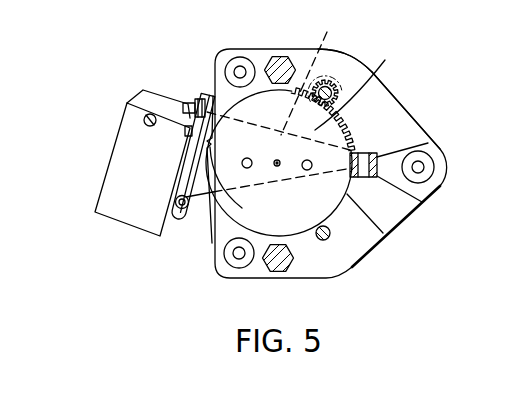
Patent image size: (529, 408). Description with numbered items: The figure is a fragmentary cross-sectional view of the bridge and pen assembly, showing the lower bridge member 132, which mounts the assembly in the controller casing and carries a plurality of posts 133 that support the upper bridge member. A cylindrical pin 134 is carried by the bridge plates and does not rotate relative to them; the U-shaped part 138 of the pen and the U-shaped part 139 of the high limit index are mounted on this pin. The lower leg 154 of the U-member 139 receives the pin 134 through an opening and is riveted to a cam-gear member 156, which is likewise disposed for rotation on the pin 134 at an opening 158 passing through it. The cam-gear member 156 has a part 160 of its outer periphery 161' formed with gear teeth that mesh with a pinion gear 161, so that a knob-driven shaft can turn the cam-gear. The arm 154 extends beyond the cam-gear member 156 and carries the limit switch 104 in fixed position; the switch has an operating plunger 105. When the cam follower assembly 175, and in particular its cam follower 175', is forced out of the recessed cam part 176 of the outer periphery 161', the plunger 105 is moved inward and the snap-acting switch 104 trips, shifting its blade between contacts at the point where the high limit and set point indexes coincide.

The limit switch 104 is at (135, 133).
The operating plunger 105 is at (188, 126).
The lower bridge member 132 is at (405, 128).
The post 133 is at (278, 62).
The cylindrical pin 134 is at (278, 166).
The U-shaped part 138 is at (428, 143).
The U-shaped part 139 is at (422, 202).
The lower leg 154 is at (324, 71).
The cam-gear member 156 is at (371, 107).
The opening 158 is at (341, 136).
The toothed part of outer periphery 160 is at (335, 50).
The pinion gear 161 is at (360, 90).
The outer periphery 161' is at (393, 226).
The cam follower assembly 175 is at (192, 176).
The cam follower 175' is at (269, 168).
The recessed cam part 176 is at (216, 139).